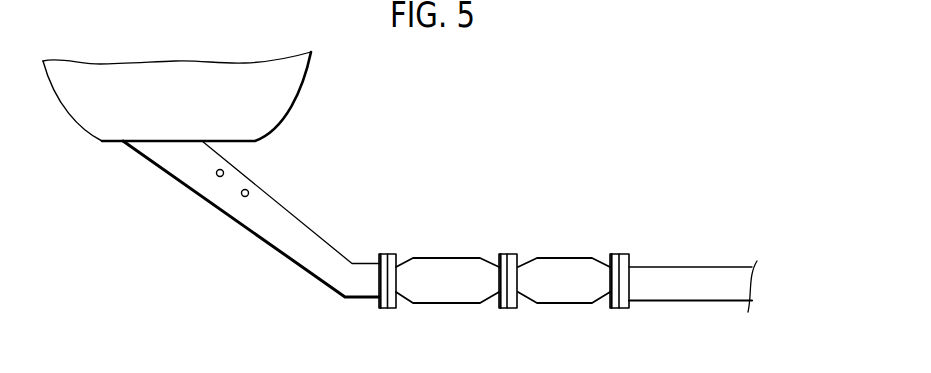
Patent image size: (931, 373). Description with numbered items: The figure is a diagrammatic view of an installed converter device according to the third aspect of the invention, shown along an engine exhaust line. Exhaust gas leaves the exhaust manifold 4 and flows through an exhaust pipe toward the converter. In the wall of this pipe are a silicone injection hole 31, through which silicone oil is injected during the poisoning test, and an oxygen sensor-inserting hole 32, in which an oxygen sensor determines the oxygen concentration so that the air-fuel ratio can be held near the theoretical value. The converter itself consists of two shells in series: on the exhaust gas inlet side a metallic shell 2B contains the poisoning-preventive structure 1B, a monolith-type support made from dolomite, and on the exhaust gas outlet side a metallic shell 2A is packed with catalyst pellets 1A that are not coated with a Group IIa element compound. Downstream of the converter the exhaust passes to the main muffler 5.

The exhaust manifold 4 is at (292, 90).
The oxygen sensor-inserting hole 32 is at (223, 171).
The silicone injection hole 31 is at (248, 191).
The metallic shell 2B is at (452, 256).
The poisoning-preventive structure 1B is at (447, 327).
The metallic shell 2A is at (561, 256).
The catalyst pellets 1A is at (573, 296).
The main muffler 5 is at (690, 264).